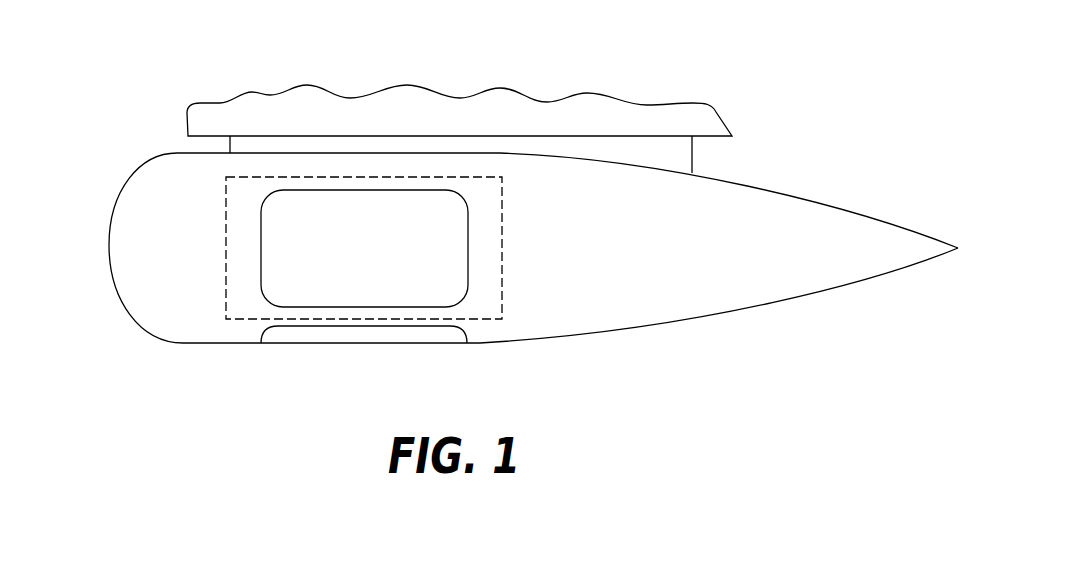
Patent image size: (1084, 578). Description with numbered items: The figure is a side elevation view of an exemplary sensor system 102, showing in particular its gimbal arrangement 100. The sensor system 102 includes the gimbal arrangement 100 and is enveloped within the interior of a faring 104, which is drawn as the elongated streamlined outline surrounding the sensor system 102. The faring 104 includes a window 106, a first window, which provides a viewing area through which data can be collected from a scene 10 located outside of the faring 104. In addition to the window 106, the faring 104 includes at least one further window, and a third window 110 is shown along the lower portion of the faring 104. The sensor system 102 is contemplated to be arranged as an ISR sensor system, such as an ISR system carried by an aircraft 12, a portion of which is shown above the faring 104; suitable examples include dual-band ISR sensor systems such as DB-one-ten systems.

The scene 10 is at (73, 200).
The aircraft 12 is at (587, 117).
The gimbal arrangement 100 is at (225, 232).
The sensor system 102 is at (157, 383).
The faring 104 is at (642, 330).
The window 106 is at (262, 276).
The third window 110 is at (322, 335).